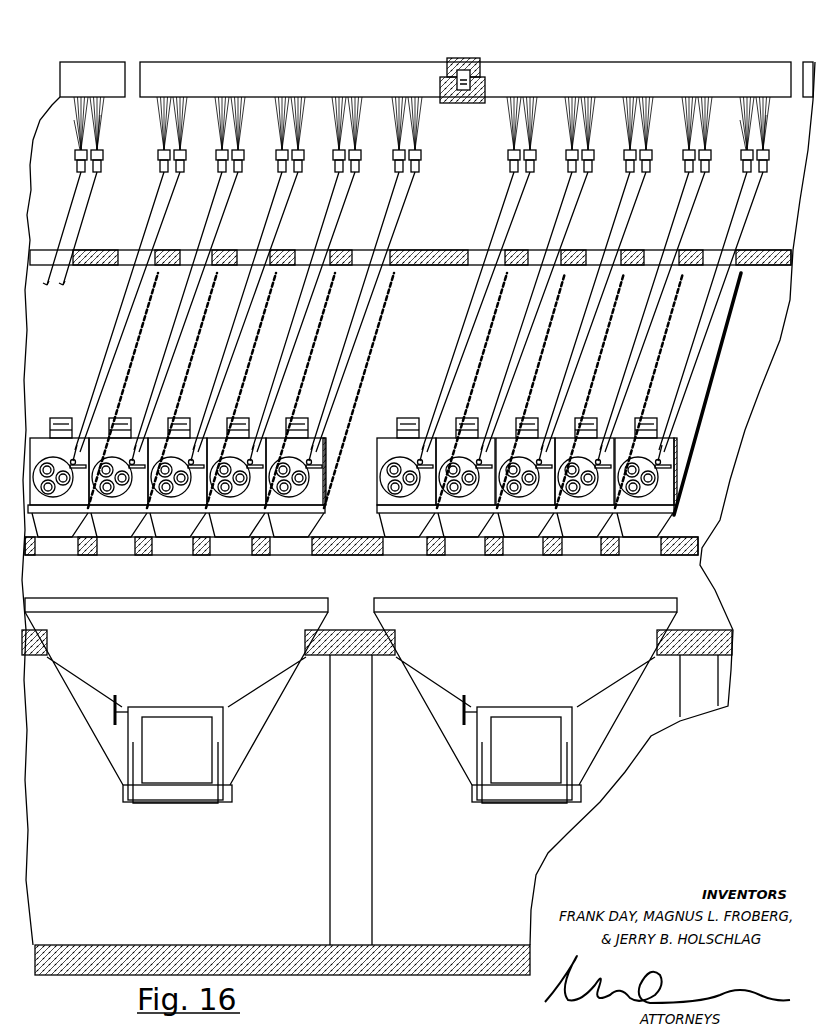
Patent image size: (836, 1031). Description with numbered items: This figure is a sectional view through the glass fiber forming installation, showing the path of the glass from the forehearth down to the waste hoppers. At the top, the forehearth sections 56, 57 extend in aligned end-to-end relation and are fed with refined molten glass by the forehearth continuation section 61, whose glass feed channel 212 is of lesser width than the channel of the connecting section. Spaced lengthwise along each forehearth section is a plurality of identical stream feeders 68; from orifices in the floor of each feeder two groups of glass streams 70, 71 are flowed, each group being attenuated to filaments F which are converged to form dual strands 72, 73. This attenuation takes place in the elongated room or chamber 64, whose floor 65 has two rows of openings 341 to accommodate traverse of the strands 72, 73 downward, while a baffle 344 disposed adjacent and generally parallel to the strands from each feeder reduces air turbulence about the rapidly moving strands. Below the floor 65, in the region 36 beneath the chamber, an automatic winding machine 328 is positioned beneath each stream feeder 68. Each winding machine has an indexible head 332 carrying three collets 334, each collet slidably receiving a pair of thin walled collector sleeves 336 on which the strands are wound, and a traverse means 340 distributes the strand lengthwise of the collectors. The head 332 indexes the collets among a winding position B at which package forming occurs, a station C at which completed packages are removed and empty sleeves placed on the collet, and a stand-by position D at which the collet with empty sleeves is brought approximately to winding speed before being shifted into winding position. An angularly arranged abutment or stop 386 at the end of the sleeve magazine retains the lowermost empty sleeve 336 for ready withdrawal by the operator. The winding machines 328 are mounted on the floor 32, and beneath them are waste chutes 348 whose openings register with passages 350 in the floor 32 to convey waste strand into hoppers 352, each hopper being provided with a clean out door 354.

The forehearth section 57 is at (98, 48).
The forehearth section 56 is at (167, 62).
The forehearth continuation section 61 is at (470, 58).
The glass feed channel 212 is at (457, 75).
The stream feeder 68 is at (105, 100).
The group of glass streams 70 is at (76, 128).
The group of glass streams 71 is at (101, 124).
The filaments F is at (76, 145).
The strand 72 is at (75, 194).
The strand 73 is at (86, 198).
The room or chamber 64 is at (478, 175).
The floor 65 is at (432, 251).
The openings 341 is at (135, 238).
The baffle 344 is at (388, 285).
The lower chamber 36 is at (428, 357).
The automatic winding machine 328 is at (90, 430).
The indexible head 332 is at (382, 480).
The collet 334 is at (62, 478).
The traverse means 340 is at (672, 468).
The collector sleeve 336 is at (672, 424).
The abutment or stop 386 is at (655, 436).
The floor 32 is at (358, 545).
The waste chute 348 is at (85, 556).
The passage 350 is at (65, 556).
The hopper 352 is at (268, 705).
The clean out door 354 is at (164, 785).
The stand-by position D is at (568, 448).
The winding position B is at (602, 495).
The package removal station C is at (575, 490).